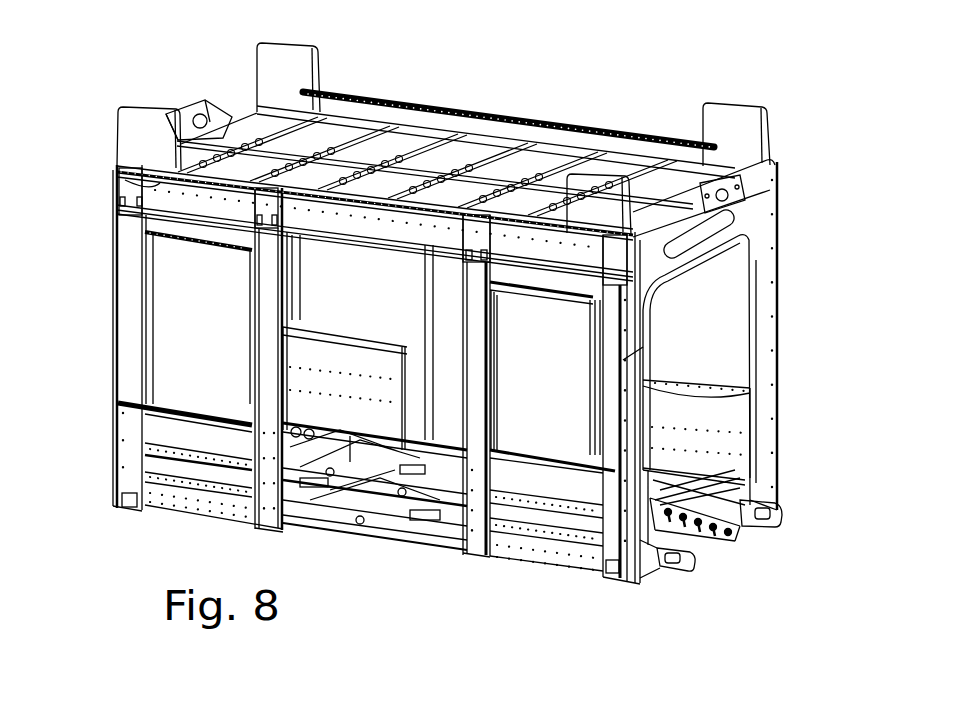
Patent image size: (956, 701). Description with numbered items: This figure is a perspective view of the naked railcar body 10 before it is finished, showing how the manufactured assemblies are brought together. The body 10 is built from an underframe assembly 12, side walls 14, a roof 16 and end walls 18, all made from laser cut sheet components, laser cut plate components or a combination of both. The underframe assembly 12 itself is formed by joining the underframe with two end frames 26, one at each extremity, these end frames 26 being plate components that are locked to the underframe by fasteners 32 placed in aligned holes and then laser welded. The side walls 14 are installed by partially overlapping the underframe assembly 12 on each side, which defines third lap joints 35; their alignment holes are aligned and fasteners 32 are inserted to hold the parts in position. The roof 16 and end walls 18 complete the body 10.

The railcar body 10 is at (583, 72).
The underframe assembly 12 is at (298, 462).
The side walls 14 is at (400, 308).
The roof 16 is at (497, 138).
The end walls 18 is at (758, 206).
The end frames 26 is at (737, 544).
The fasteners 32 is at (140, 190).
The third lap joints 35 is at (193, 190).